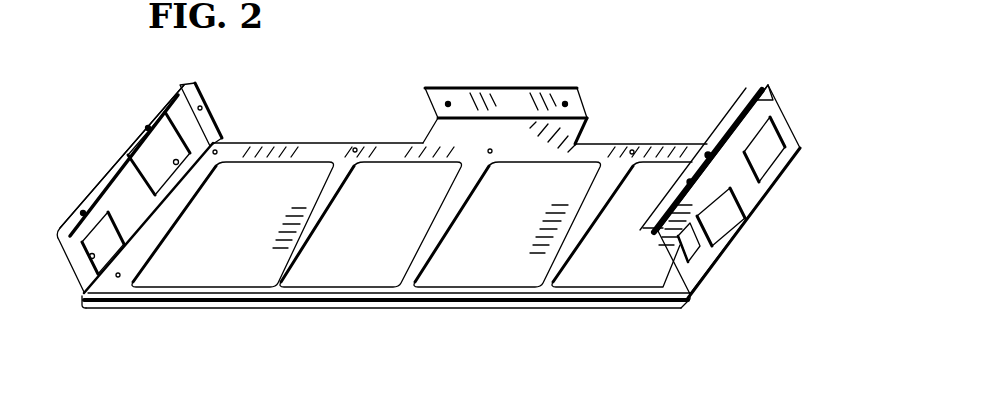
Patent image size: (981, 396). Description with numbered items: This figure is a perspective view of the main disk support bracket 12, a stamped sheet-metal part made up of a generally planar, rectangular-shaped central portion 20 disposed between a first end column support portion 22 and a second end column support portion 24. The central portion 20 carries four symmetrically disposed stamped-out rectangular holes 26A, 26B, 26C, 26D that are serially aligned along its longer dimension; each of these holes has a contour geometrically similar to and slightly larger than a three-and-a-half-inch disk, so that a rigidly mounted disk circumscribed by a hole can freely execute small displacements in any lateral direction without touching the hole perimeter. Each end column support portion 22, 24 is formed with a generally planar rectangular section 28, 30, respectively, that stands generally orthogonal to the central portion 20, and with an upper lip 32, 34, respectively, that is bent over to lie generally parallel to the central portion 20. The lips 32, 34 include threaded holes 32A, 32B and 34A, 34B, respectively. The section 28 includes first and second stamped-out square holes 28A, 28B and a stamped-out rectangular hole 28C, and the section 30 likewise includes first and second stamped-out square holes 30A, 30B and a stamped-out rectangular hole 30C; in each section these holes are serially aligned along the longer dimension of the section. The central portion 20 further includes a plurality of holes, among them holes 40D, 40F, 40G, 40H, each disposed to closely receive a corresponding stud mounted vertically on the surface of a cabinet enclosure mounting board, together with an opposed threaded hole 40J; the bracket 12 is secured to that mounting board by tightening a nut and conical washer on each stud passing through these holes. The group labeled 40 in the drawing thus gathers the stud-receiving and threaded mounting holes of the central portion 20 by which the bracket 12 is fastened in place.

The main disk support bracket 12 is at (520, 76).
The central portion 20 is at (632, 313).
The first end column support portion 22 is at (689, 178).
The second end column support portion 24 is at (141, 185).
The stamped-out rectangular hole 26A is at (575, 261).
The stamped-out rectangular hole 26B is at (452, 243).
The stamped-out rectangular hole 26C is at (302, 250).
The stamped-out rectangular hole 26D is at (296, 226).
The planar rectangular section 28 is at (783, 116).
The stamped-out square hole 28A is at (780, 159).
The stamped-out square hole 28B is at (730, 217).
The stamped-out rectangular hole 28C is at (700, 256).
The planar rectangular section 30 is at (83, 268).
The stamped-out square hole 30A is at (177, 160).
The stamped-out square hole 30B is at (148, 228).
The stamped-out rectangular hole 30C is at (100, 248).
The upper lip 32 is at (748, 102).
The threaded hole 32A is at (708, 152).
The threaded hole 32B is at (687, 182).
The upper lip 34 is at (160, 105).
The threaded hole 34A is at (80, 212).
The threaded hole 34B is at (145, 127).
The back mounting tab 40 is at (505, 120).
The hole 40D is at (117, 278).
The hole 40F is at (632, 150).
The hole 40G is at (356, 148).
The hole 40H is at (217, 151).
The threaded hole 40J is at (488, 153).